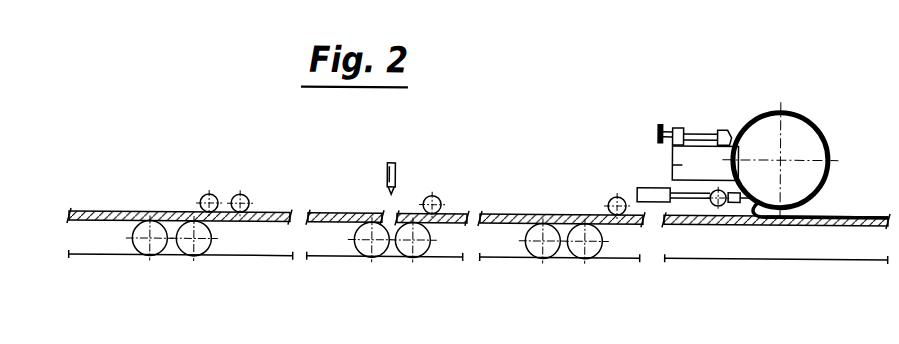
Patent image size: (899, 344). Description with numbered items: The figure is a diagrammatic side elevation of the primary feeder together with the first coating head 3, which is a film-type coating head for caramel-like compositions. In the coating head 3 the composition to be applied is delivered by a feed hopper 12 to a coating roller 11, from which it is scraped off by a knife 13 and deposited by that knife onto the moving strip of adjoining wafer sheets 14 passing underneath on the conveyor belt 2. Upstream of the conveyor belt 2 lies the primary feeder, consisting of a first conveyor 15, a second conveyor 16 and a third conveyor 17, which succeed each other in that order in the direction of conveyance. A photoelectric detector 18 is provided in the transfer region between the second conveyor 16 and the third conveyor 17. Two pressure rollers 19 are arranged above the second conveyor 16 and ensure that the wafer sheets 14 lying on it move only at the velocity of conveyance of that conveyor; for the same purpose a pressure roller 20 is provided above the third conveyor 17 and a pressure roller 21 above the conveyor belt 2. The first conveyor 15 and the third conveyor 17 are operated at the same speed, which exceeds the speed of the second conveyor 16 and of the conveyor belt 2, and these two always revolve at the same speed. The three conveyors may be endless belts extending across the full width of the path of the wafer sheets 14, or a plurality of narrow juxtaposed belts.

The conveyor belt 2 is at (730, 266).
The first coating head 3 is at (717, 103).
The coating roller 11 is at (808, 140).
The feed hopper 12 is at (682, 160).
The knife 13 is at (655, 184).
The wafer sheets 14 is at (125, 211).
The first conveyor 15 is at (111, 266).
The second conveyor 16 is at (271, 266).
The third conveyor 17 is at (446, 266).
The photoelectric detector 18 is at (395, 162).
The pressure rollers 19 is at (238, 193).
The pressure roller 20 is at (438, 194).
The pressure roller 21 is at (610, 193).